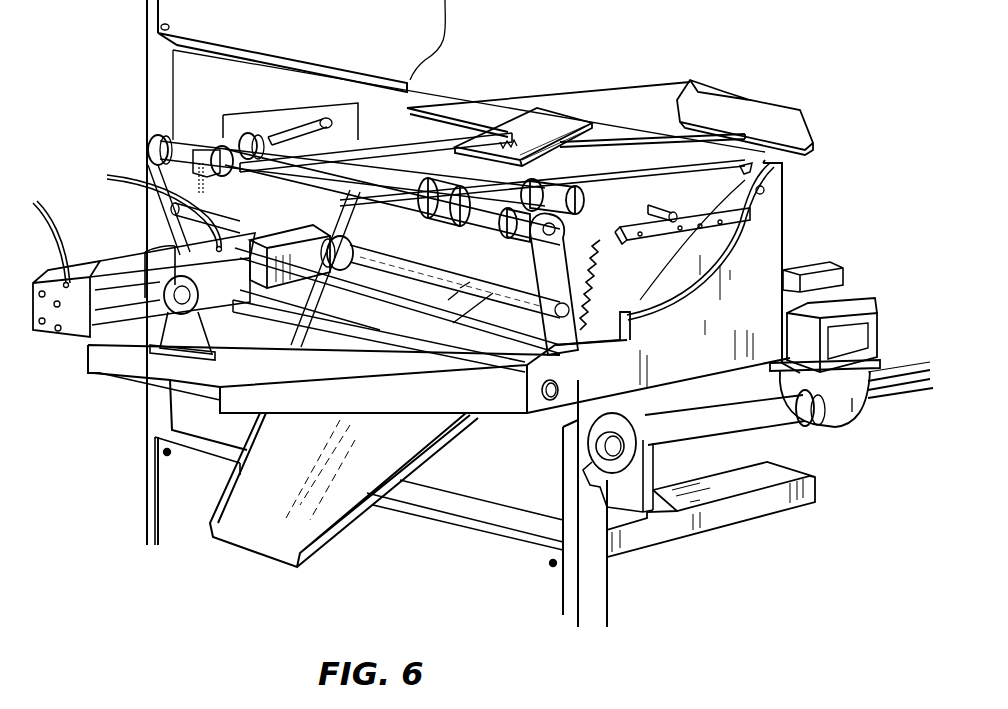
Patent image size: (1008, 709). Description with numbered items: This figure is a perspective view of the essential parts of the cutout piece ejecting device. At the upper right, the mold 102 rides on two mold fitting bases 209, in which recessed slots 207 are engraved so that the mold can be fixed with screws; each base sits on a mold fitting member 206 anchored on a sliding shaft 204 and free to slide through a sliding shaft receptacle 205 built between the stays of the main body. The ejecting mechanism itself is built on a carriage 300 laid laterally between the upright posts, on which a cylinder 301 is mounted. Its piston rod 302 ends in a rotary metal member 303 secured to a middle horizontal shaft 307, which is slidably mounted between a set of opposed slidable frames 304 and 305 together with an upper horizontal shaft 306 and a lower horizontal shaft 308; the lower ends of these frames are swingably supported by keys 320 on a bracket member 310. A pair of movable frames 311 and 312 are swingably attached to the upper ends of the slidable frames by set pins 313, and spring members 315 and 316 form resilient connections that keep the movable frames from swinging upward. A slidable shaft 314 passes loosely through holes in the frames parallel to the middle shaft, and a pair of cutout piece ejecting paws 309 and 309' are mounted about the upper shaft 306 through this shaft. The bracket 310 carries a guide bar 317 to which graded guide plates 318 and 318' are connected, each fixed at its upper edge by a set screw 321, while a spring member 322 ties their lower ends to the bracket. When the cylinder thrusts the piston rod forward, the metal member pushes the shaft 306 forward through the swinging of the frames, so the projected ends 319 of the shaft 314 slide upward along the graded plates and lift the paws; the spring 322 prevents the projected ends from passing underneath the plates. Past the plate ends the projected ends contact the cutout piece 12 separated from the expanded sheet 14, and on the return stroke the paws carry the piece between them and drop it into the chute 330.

The cutout piece 12 is at (522, 124).
The expanded sheet 14 is at (790, 125).
The mold 102 is at (610, 115).
The sliding shaft 204 is at (768, 425).
The sliding shaft receptacle 205 is at (833, 432).
The mold fitting member 206 is at (852, 415).
The recessed slot 207 is at (805, 290).
The mold fitting base 209 is at (890, 316).
The carriage 300 is at (210, 395).
The cylinder 301 is at (80, 328).
The piston rod 302 is at (262, 290).
The rotary metal member 303 is at (325, 262).
The slidable frame 304 is at (183, 242).
The slidable frame 305 is at (548, 290).
The upper horizontal shaft 306 is at (490, 225).
The middle horizontal shaft 307 is at (458, 285).
The lower horizontal shaft 308 is at (355, 330).
The cutout piece ejecting paw 309 is at (542, 131).
The cutout piece ejecting paw 309' is at (376, 121).
The bracket member 310 is at (773, 246).
The movable frame 311 is at (205, 140).
The movable frame 312 is at (580, 200).
The set pin 313 is at (541, 238).
The slidable shaft 314 is at (428, 196).
The spring member 315 is at (654, 350).
The spring member 316 is at (204, 192).
The guide bar 317 is at (700, 230).
The guide plate 318 is at (787, 182).
The guide plate 318' is at (282, 113).
The projected end 319 is at (636, 300).
The key 320 is at (545, 402).
The set screw 321 is at (764, 195).
The spring member 322 is at (722, 260).
The chute 330 is at (328, 515).